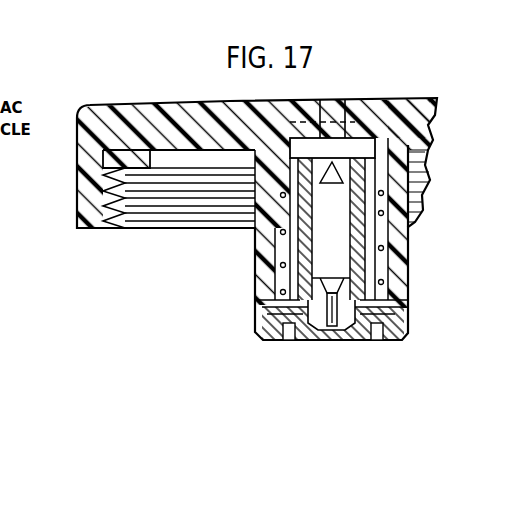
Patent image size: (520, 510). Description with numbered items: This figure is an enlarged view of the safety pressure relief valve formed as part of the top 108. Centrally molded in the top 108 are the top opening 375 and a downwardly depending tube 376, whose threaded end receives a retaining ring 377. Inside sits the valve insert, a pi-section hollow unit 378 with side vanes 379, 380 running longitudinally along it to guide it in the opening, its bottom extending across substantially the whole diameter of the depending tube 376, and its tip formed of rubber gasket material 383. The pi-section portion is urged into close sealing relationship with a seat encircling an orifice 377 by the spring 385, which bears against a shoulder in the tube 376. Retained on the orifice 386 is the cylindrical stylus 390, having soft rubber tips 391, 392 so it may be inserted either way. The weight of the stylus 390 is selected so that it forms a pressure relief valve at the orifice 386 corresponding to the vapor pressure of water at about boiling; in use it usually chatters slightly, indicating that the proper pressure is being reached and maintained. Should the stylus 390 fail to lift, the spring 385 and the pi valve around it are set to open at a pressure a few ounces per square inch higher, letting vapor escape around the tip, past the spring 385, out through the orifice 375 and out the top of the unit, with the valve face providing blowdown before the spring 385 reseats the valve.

The top 108 is at (168, 110).
The top opening 375 is at (340, 106).
The pi-section hollow unit 378 is at (360, 146).
The side vane 380 is at (436, 127).
The soft rubber tip 391 is at (338, 181).
The cylindrical stylus 390 is at (340, 242).
The spring 385 is at (385, 250).
The soft rubber tip 392 is at (348, 280).
The side vane 379 is at (238, 230).
The downwardly depending tube 376 is at (260, 278).
The retaining ring 377 is at (322, 336).
The orifice 386 is at (333, 332).
The rubber gasket material 383 is at (350, 334).